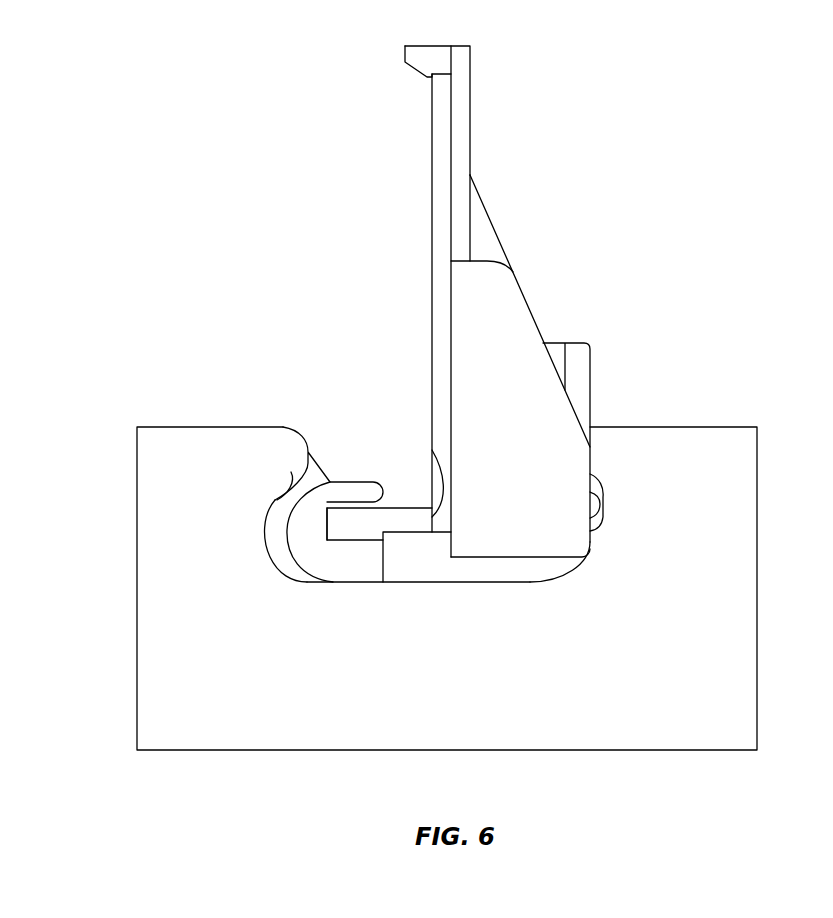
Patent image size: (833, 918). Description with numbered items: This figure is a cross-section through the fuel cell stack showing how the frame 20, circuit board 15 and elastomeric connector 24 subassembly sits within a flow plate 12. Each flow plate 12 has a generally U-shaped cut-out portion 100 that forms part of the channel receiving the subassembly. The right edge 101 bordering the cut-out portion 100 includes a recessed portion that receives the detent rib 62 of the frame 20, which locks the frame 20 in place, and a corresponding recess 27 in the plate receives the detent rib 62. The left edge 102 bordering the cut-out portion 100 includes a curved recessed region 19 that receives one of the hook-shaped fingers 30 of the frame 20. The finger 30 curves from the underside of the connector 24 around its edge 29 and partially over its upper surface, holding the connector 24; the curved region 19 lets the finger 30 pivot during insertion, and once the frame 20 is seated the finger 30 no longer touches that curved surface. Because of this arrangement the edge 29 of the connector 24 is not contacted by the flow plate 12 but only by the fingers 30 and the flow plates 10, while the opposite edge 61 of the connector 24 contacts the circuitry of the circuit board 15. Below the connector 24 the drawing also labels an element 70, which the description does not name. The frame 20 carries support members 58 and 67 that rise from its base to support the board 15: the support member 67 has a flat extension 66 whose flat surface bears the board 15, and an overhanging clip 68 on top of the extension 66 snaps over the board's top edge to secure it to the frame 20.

The flow plate 10 is at (308, 450).
The flow plate 12 is at (703, 427).
The circuit board 15 is at (438, 260).
The recessed region 19 is at (291, 472).
The frame 20 is at (480, 217).
The elastomeric connector 24 is at (364, 518).
The recess 27 is at (595, 487).
The edge 29 is at (327, 528).
The hook-shaped finger 30 is at (287, 513).
The support member 58 is at (488, 233).
The edge 61 is at (432, 450).
The detent rib 62 is at (603, 502).
The flat extension 66 is at (460, 108).
The support member 67 is at (470, 65).
The overhanging clip 68 is at (405, 62).
The lower block 70 is at (403, 550).
The U-shaped cut-out portion 100 is at (518, 583).
The right edge 101 is at (592, 543).
The left edge 102 is at (265, 532).